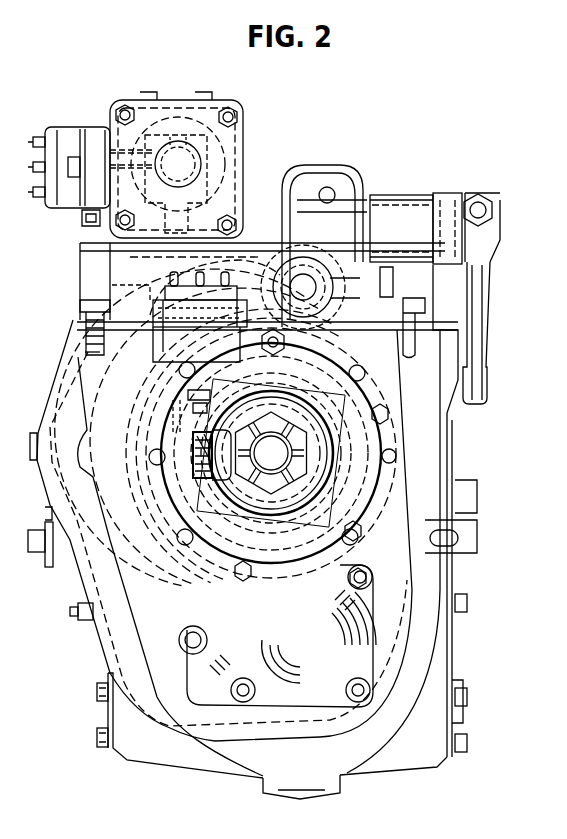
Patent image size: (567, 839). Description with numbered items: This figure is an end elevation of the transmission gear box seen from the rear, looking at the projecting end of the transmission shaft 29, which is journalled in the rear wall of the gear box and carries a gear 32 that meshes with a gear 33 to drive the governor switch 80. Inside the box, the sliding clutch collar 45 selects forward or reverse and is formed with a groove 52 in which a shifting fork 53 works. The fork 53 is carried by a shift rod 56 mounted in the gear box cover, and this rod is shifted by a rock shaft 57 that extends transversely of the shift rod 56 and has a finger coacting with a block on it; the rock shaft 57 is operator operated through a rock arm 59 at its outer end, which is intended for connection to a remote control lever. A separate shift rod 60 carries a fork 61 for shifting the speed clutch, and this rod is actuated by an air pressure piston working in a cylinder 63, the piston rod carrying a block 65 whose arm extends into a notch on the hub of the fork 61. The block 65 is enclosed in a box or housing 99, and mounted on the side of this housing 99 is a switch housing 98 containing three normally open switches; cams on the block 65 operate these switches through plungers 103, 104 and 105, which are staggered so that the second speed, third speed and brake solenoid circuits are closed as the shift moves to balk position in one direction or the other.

The transmission shaft 29 is at (271, 453).
The gear 32 is at (220, 478).
The gear 33 is at (193, 452).
The sliding clutch collar 45 is at (410, 475).
The groove 52 is at (445, 430).
The shifting fork 53 is at (132, 407).
The shift rod 56 is at (314, 247).
The rock shaft 57 is at (410, 215).
The rock arm 59 is at (478, 290).
The shift rod 60 is at (158, 288).
The fork 61 is at (165, 476).
The cylinder 63 is at (173, 103).
The block 65 is at (205, 153).
The governor switch 80 is at (163, 298).
The switch housing 98 is at (60, 138).
The box or housing 99 is at (212, 118).
The plunger 103 is at (132, 185).
The plunger 104 is at (125, 167).
The plunger 105 is at (138, 152).